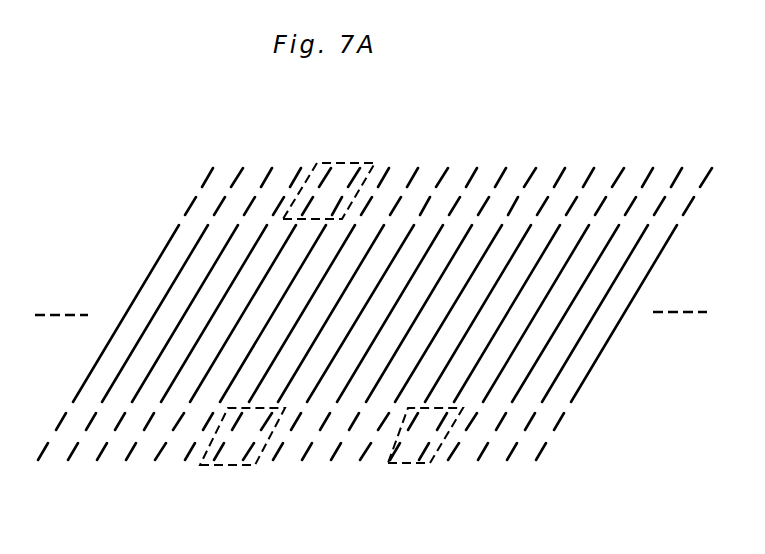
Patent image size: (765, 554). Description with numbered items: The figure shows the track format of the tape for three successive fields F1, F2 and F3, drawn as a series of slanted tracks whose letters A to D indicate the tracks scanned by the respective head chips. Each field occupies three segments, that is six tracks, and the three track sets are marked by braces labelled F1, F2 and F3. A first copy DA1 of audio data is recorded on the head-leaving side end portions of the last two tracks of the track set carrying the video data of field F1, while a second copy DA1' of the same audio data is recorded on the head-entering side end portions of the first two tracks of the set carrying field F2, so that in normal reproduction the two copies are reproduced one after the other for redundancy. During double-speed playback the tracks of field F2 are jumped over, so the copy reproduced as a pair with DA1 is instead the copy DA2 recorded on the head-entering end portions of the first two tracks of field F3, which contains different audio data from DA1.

The first field F1 is at (180, 473).
The second field F2 is at (362, 473).
The third field F3 is at (532, 473).
The first copy of audio data DA1 is at (355, 158).
The second copy of audio data DA1' is at (225, 476).
The second copy of audio data for field F3 DA2 is at (385, 466).